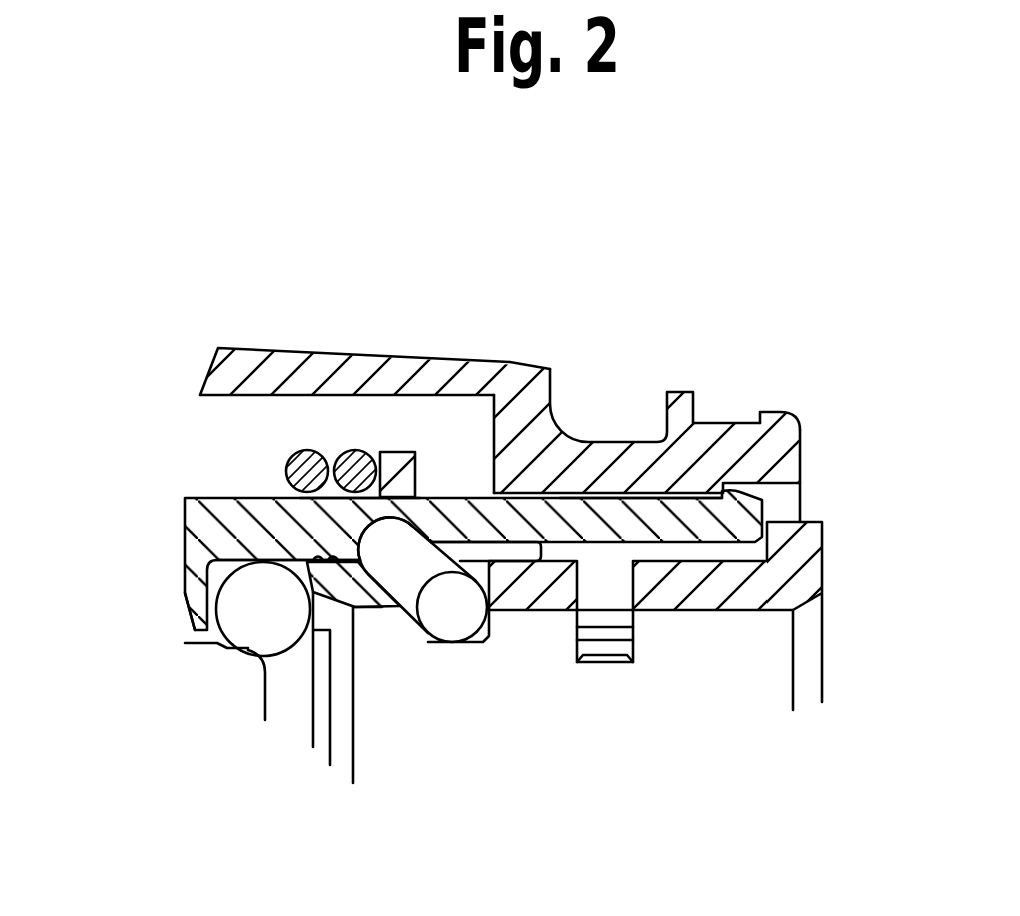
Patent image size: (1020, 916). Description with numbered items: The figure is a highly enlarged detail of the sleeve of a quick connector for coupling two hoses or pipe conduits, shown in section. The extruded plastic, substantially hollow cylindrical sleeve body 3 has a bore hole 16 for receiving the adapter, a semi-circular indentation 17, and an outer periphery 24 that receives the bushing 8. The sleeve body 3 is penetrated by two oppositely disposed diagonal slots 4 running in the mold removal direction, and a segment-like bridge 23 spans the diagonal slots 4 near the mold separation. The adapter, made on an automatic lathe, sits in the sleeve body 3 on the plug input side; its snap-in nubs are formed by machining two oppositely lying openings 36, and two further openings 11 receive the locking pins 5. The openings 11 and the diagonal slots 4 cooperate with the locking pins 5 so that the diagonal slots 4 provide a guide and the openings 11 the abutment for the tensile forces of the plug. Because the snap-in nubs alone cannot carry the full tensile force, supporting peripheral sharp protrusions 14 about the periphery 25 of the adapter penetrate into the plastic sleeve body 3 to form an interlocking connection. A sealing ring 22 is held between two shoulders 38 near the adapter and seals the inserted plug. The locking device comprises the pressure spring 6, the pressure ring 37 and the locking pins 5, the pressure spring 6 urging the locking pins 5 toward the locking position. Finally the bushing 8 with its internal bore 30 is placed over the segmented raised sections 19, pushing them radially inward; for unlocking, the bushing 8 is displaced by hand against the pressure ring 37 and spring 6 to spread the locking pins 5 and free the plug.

The sleeve body 3 is at (743, 477).
The diagonal slots 4 is at (393, 553).
The locking pins 5 is at (461, 612).
The pressure spring 6 is at (283, 455).
The bushing 8 is at (252, 372).
The openings 11 is at (487, 655).
The peripheral sharp protrusions 14 is at (558, 557).
The bore hole 16 is at (238, 545).
The semi-circular indentation 17 is at (720, 555).
The segmented raised sections 19 is at (783, 412).
The sealing ring 22 is at (280, 613).
The segment-like bridge 23 is at (383, 497).
The outer periphery 24 is at (480, 493).
The periphery of the adapter 25 is at (633, 480).
The internal bore 30 is at (688, 517).
The openings 36 is at (633, 612).
The pressure ring 37 is at (393, 452).
The shoulders 38 is at (300, 600).